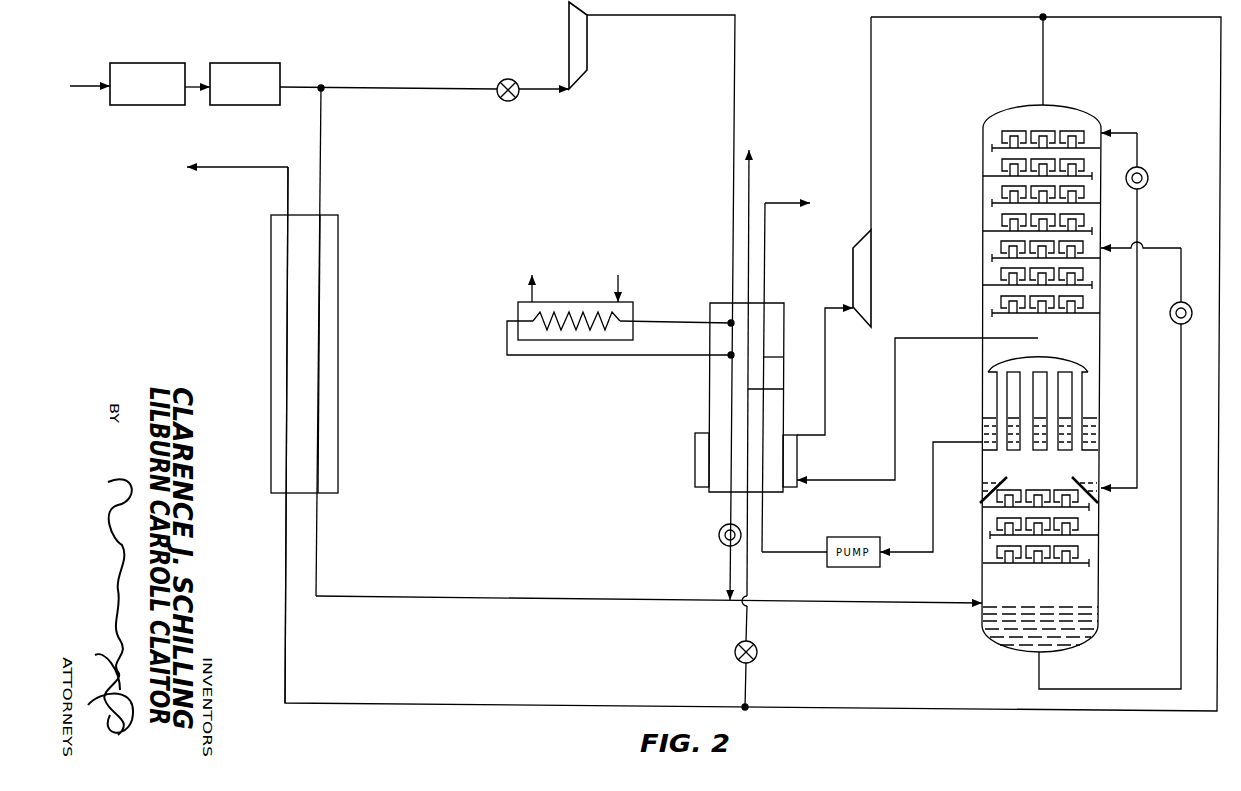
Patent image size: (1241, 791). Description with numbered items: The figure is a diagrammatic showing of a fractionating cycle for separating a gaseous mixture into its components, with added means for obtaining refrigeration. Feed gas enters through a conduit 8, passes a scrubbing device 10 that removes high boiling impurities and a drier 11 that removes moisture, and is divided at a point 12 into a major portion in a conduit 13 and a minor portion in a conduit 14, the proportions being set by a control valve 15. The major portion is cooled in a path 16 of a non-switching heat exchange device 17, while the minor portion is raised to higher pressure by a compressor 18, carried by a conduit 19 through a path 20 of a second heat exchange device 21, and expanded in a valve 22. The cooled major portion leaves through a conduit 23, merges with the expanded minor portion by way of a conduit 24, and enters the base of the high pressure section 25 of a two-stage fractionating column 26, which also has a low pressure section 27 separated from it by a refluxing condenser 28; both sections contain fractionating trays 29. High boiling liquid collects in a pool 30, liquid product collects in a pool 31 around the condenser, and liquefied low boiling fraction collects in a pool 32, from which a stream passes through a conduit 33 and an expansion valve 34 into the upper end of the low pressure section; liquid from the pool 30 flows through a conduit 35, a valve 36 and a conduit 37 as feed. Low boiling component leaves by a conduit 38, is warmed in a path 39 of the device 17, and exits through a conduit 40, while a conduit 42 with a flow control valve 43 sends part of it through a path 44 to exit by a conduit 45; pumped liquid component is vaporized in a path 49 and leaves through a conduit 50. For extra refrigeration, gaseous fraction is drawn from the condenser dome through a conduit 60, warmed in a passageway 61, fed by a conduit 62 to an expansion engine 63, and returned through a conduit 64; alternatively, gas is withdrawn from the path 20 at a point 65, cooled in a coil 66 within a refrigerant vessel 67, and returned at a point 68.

The conduit 8 is at (96, 86).
The scrubbing device 10 is at (139, 62).
The drier 11 is at (234, 62).
The point 12 is at (321, 85).
The conduit 13 is at (322, 143).
The conduit 14 is at (539, 88).
The control valve 15 is at (508, 79).
The path 16 is at (322, 401).
The heat exchange device 17 is at (341, 333).
The compressor 18 is at (584, 61).
The conduit 19 is at (735, 62).
The path 20 is at (708, 414).
The heat exchange device 21 is at (786, 337).
The valve 22 is at (720, 530).
The conduit 23 is at (729, 570).
The conduit 24 is at (541, 597).
The high pressure section 25 is at (982, 535).
The fractionating column 26 is at (981, 230).
The low pressure section 27 is at (983, 190).
The refluxing condenser 28 is at (1059, 361).
The fractionating trays 29 is at (983, 283).
The pool 30 is at (1094, 622).
The pool 31 is at (1094, 432).
The pool 32 is at (1094, 483).
The conduit 33 is at (1136, 386).
The expansion valve 34 is at (1146, 172).
The conduit 35 is at (1180, 468).
The valve 36 is at (1174, 304).
The conduit 37 is at (1161, 248).
The conduit 38 is at (858, 708).
The path 39 is at (287, 373).
The conduit 40 is at (237, 155).
The conduit 42 is at (744, 690).
The flow control valve 43 is at (735, 650).
The path 44 is at (784, 389).
The conduit 45 is at (750, 183).
The path 49 is at (784, 357).
The conduit 50 is at (781, 203).
The conduit 60 is at (946, 339).
The heat exchange passageway 61 is at (798, 469).
The conduit 62 is at (826, 386).
The expansion engine 63 is at (855, 265).
The conduit 64 is at (873, 70).
The point 65 is at (729, 323).
The coil 66 is at (575, 320).
The vessel 67 is at (518, 312).
The point 68 is at (729, 357).